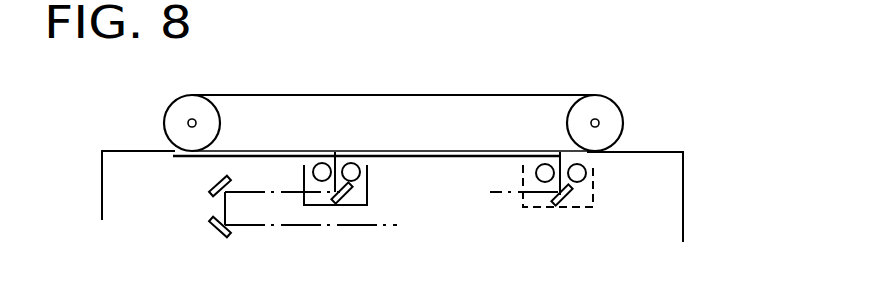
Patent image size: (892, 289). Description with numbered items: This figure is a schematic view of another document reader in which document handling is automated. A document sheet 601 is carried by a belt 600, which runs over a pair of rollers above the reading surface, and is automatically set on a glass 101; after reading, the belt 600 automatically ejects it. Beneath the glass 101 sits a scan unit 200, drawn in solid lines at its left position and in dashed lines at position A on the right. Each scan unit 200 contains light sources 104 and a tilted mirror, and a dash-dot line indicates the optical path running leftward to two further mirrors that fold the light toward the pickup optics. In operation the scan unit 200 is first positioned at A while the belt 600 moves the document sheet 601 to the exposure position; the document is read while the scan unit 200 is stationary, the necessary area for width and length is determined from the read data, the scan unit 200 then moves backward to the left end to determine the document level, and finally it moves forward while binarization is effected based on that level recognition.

The glass 101 is at (175, 152).
The light source 104 is at (320, 163).
The scan unit 200 is at (333, 206).
The belt 600 is at (477, 94).
The document sheet 601 is at (623, 129).